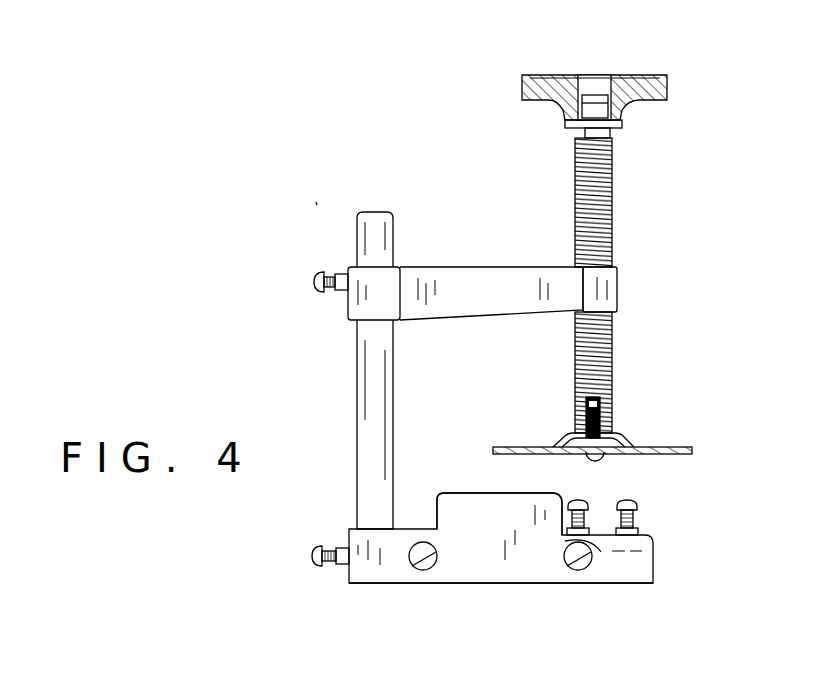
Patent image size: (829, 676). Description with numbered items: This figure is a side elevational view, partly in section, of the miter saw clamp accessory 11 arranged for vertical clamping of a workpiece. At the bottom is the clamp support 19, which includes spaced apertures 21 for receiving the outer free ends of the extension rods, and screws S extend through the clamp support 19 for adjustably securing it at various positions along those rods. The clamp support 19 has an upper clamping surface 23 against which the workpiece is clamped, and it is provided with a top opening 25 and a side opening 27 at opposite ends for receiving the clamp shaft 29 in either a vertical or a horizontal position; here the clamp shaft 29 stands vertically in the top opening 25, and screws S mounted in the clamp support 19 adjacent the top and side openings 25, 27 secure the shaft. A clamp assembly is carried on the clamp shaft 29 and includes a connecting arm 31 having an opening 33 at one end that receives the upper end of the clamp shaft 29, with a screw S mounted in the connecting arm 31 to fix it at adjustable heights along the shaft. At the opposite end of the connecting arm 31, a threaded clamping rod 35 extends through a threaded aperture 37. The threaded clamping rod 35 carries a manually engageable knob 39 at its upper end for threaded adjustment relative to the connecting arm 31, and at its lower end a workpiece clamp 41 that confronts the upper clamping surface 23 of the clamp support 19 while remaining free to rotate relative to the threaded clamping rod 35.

The miter saw clamp accessory 11 is at (316, 202).
The clamp support 19 is at (495, 545).
The spaced aperture 21 is at (418, 556).
The upper clamping surface 23 is at (462, 493).
The top opening 25 is at (372, 507).
The side opening 27 is at (655, 558).
The clamp shaft 29 is at (372, 386).
The connecting arm 31 is at (488, 292).
The opening 33 is at (383, 260).
The threaded clamping rod 35 is at (600, 200).
The threaded aperture 37 is at (612, 265).
The manually engageable knob 39 is at (645, 82).
The workpiece clamp 41 is at (660, 447).
The screw S is at (312, 278).